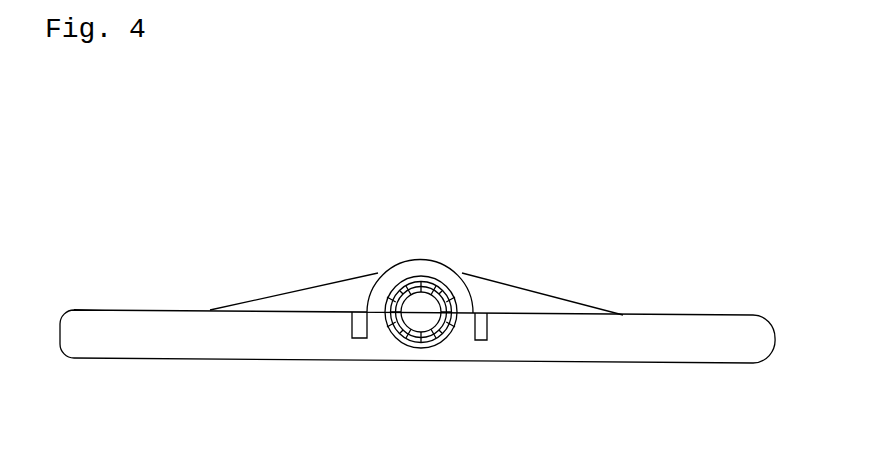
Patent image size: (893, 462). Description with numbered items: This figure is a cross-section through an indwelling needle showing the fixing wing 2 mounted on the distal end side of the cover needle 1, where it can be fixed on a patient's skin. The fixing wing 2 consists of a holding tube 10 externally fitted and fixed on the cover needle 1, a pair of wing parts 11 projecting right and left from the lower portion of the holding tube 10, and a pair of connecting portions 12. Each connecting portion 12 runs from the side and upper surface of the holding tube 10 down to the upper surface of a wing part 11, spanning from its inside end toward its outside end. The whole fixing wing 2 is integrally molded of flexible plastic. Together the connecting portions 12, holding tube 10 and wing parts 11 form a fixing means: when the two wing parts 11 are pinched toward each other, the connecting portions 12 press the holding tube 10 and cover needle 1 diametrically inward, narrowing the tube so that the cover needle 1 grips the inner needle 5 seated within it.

The cover needle 1 is at (400, 338).
The inner needle 5 is at (447, 340).
The fixing wing 2 is at (516, 263).
The holding tube 10 is at (420, 257).
The wing parts 11 is at (147, 310).
The connecting portions 12 is at (297, 287).